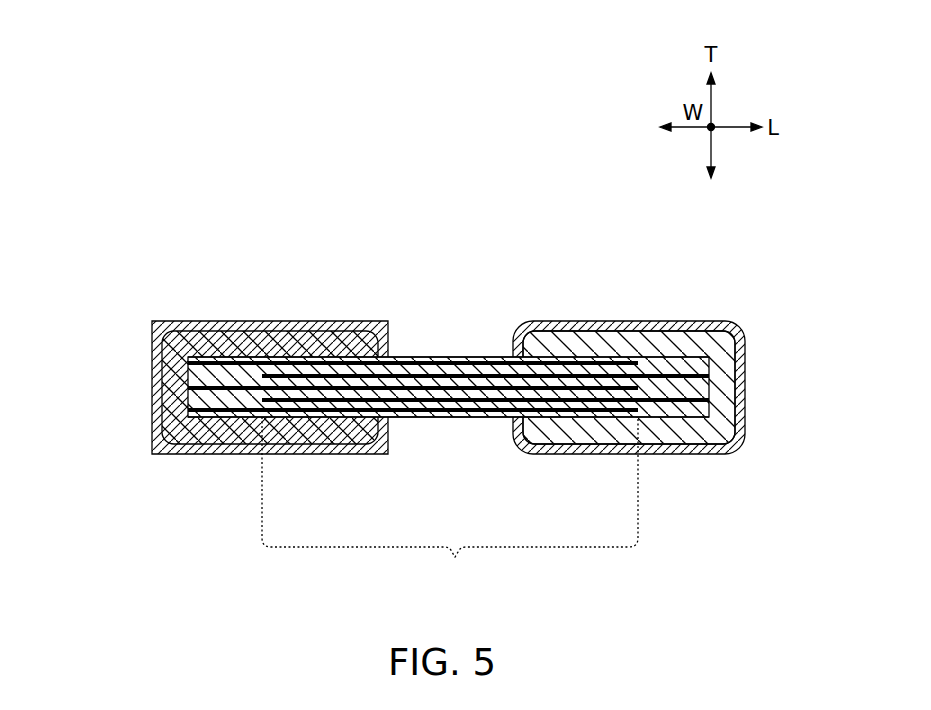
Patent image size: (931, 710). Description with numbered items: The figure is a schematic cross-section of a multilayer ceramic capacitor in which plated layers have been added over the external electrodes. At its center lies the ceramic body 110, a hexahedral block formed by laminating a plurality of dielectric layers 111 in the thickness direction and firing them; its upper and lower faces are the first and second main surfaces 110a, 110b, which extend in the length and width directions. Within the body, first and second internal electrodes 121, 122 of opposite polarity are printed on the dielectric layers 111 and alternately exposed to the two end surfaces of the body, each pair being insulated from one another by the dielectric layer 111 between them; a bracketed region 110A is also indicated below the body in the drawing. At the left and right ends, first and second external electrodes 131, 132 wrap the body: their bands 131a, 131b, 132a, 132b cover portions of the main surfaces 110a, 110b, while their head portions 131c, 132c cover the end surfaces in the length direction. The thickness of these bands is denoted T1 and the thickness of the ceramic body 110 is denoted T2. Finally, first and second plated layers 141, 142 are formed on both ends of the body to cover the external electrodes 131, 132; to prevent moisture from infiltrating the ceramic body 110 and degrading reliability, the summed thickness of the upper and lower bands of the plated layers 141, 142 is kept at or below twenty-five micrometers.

The ceramic body 110 is at (448, 390).
The first main surface 110a is at (476, 357).
The second main surface 110b is at (411, 418).
The active (capacitance forming) region 110A is at (450, 501).
The dielectric layer 111 is at (421, 361).
The first internal electrode 121 is at (226, 361).
The second internal electrode 122 is at (346, 412).
The first external electrode 131 is at (196, 312).
The band of first external electrode 131a is at (337, 322).
The band of first external electrode 131b is at (285, 455).
The head portion of first external electrode 131c is at (152, 386).
The second external electrode 132 is at (688, 312).
The band of second external electrode 132a is at (600, 322).
The band of second external electrode 132b is at (603, 454).
The head portion of second external electrode 132c is at (745, 380).
The first plated layer 141 is at (170, 328).
The second plated layer 142 is at (741, 330).
The thickness of the bands T1 is at (288, 357).
The thickness of the ceramic body T2 is at (401, 417).